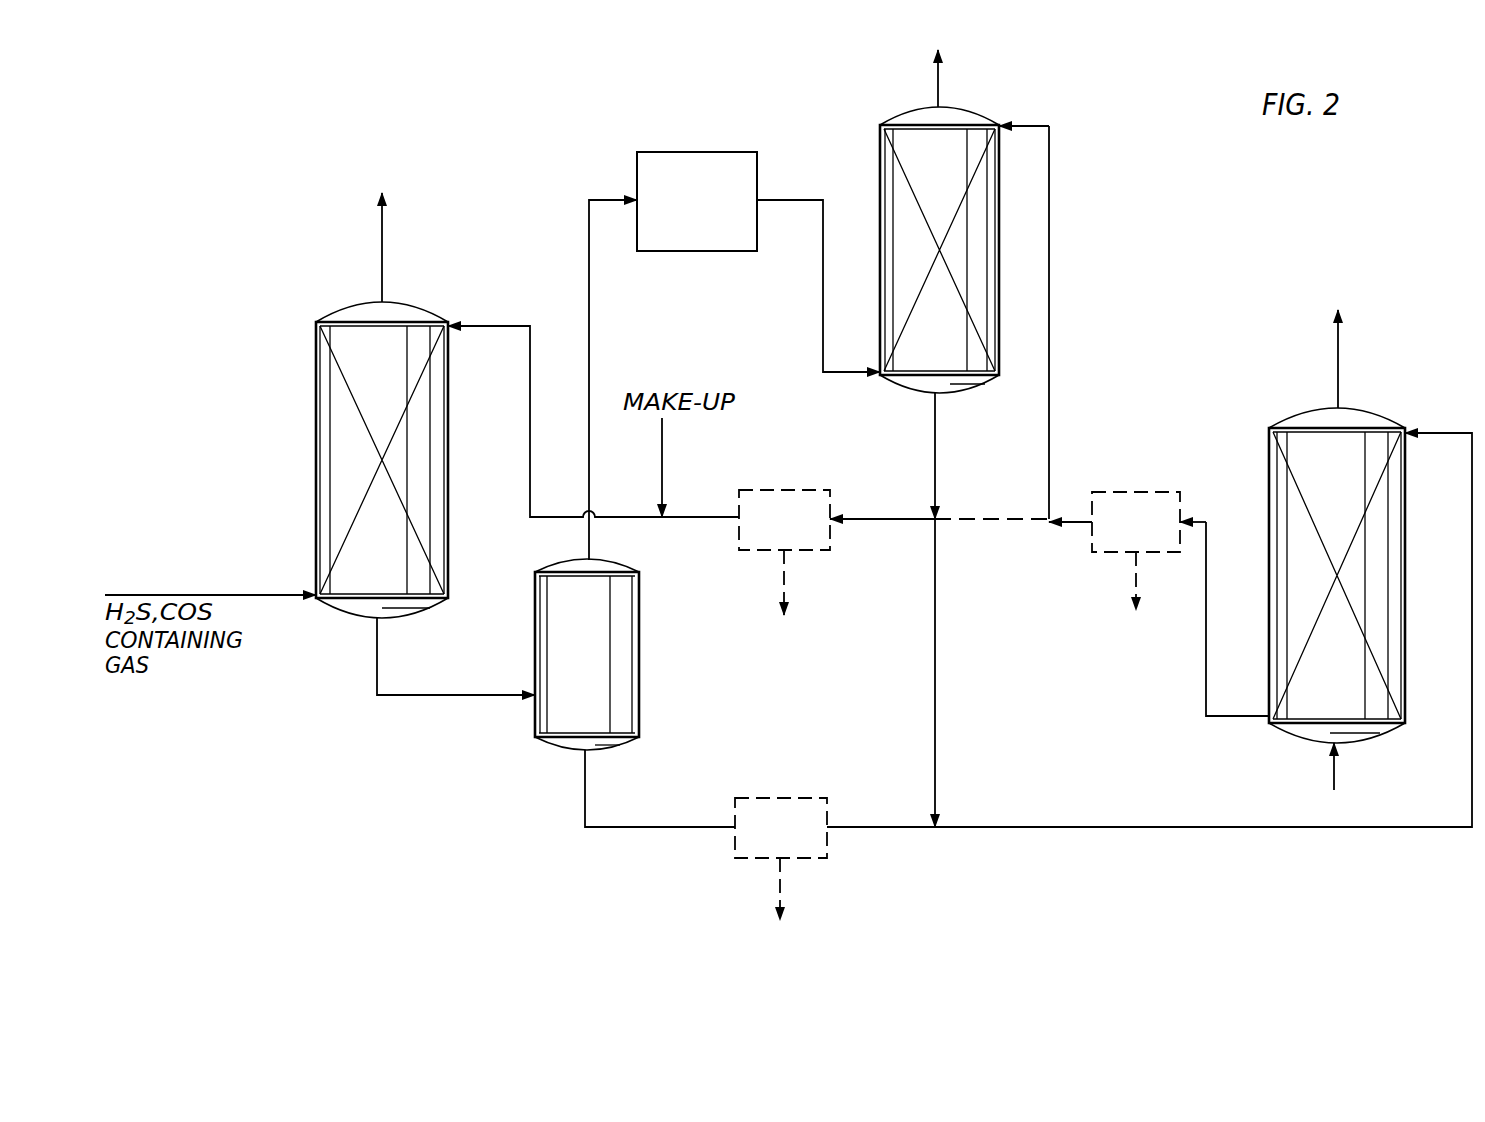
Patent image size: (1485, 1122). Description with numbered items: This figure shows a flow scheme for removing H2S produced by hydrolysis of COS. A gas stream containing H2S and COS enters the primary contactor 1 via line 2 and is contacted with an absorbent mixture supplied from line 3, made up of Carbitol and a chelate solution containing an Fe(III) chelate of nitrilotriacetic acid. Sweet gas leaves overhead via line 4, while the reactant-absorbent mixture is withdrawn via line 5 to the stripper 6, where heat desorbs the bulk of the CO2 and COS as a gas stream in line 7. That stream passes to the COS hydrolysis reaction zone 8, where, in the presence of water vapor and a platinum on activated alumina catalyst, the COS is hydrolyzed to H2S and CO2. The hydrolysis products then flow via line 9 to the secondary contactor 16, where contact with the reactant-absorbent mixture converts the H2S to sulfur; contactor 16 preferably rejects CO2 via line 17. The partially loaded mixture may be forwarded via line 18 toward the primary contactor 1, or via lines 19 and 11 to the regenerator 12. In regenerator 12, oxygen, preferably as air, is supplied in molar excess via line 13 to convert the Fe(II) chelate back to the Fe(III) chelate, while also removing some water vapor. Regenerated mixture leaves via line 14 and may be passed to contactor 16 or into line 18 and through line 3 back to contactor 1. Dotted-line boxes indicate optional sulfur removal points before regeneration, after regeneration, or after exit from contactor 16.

The contactor 1 is at (316, 400).
The line 2 is at (262, 590).
The line 3 is at (500, 326).
The line 4 is at (382, 228).
The line 5 is at (440, 695).
The stripper 6 is at (640, 680).
The line 7 is at (589, 345).
The reaction zone 8 is at (697, 152).
The line 9 is at (823, 302).
The line 11 is at (640, 828).
The regenerator 12 is at (1269, 452).
The line 13 is at (1334, 767).
The line 14 is at (1204, 665).
The secondary contactor 16 is at (880, 152).
The line 17 is at (938, 80).
The line 18 is at (887, 522).
The line 19 is at (935, 670).